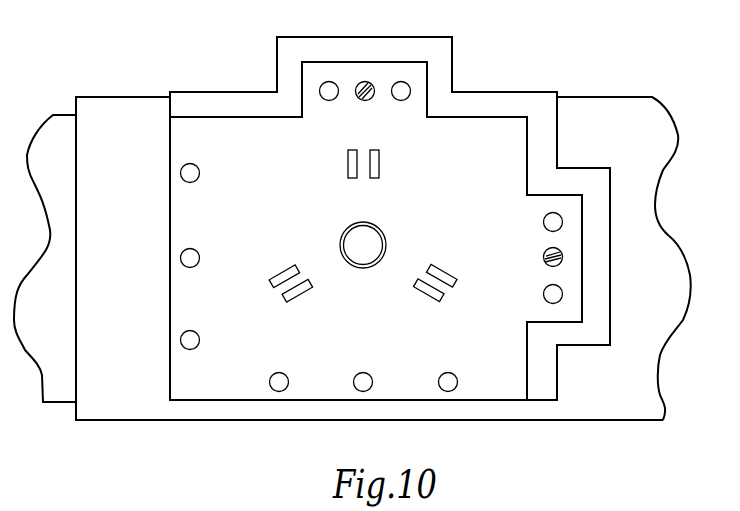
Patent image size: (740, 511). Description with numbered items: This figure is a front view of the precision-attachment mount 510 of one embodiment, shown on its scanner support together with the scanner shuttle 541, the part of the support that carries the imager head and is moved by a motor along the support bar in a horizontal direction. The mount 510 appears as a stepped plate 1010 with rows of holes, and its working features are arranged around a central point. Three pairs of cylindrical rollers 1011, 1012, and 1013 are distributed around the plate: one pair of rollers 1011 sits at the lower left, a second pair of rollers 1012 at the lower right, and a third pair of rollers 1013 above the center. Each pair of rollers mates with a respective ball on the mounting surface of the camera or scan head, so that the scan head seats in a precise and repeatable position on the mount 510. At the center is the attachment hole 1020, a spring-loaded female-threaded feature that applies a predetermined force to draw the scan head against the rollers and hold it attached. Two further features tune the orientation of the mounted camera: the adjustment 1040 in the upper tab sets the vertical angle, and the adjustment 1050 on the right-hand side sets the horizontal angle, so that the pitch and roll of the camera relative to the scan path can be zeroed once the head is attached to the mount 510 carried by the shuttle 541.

The precision-attachment mount 510 is at (250, 401).
The scanner shuttle 541 is at (610, 421).
The mounting plate 1010 is at (268, 228).
The cylindrical rollers 1011 is at (297, 300).
The cylindrical rollers 1012 is at (446, 272).
The cylindrical rollers 1013 is at (383, 158).
The attachment hole 1020 is at (384, 235).
The adjustment 1040 is at (365, 81).
The adjustment 1050 is at (562, 252).